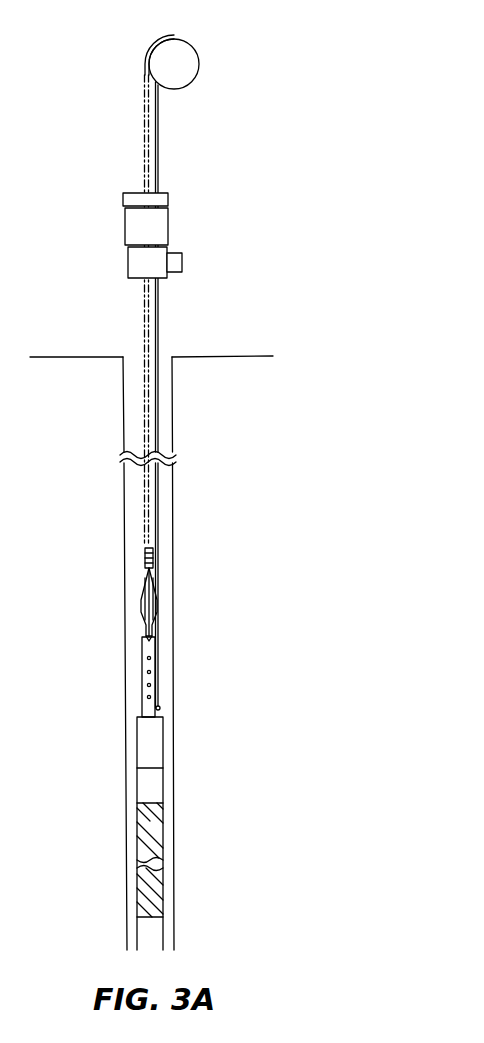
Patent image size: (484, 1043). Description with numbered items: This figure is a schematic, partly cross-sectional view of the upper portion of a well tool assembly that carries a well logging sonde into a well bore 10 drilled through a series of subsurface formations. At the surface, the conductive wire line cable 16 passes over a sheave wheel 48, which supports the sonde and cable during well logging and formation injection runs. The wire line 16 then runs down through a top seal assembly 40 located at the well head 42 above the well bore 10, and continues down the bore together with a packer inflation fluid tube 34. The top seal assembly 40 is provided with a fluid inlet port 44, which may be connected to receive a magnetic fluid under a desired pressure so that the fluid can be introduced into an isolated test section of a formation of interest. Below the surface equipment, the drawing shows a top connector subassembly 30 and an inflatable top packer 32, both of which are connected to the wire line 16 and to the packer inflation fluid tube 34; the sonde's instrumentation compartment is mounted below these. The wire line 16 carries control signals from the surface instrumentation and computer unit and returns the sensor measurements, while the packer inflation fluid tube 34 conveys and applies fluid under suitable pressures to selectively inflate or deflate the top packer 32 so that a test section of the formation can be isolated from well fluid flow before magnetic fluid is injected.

The well bore 10 is at (173, 638).
The conductive wire line cable 16 is at (142, 112).
The top connector subassembly 30 is at (165, 742).
The inflatable top packer 32 is at (165, 838).
The packer inflation fluid tube 34 is at (158, 193).
The top seal assembly 40 is at (124, 228).
The well head 42 is at (159, 245).
The fluid inlet port 44 is at (183, 262).
The sheave wheel 48 is at (196, 50).